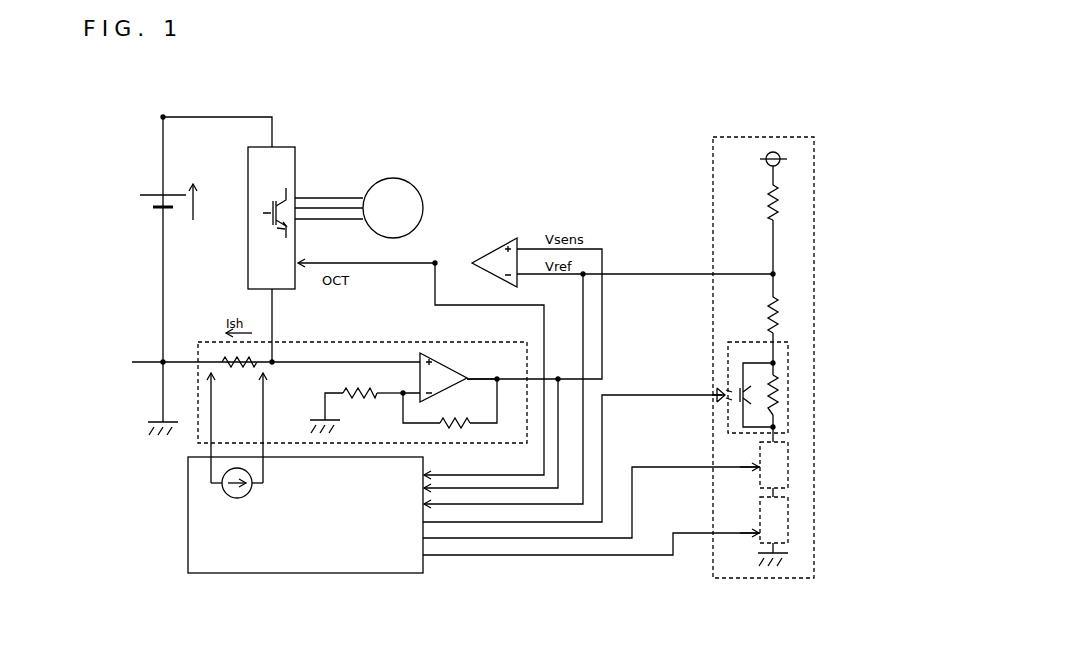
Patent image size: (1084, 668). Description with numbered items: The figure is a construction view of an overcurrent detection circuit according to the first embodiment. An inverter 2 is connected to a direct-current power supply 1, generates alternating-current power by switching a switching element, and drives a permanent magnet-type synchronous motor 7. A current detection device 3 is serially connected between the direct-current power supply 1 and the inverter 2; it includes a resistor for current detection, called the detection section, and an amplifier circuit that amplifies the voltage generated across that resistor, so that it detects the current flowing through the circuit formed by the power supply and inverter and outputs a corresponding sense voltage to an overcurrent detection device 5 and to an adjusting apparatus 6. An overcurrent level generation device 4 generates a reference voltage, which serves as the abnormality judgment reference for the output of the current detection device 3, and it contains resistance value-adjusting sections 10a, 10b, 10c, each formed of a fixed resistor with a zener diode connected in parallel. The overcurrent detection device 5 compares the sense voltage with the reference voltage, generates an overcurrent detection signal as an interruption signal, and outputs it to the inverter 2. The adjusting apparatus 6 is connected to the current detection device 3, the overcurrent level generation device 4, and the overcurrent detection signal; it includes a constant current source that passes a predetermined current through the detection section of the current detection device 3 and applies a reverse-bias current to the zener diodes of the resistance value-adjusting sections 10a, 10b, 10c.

The direct-current power supply 1 is at (149, 198).
The inverter 2 is at (295, 150).
The current detection device 3 is at (200, 354).
The overcurrent level generation device 4 is at (800, 184).
The overcurrent detection device 5 is at (490, 248).
The adjusting apparatus 6 is at (188, 519).
The permanent magnet-type synchronous motor 7 is at (377, 182).
The resistance value-adjusting section 10a is at (788, 365).
The resistance value-adjusting section 10b is at (788, 463).
The resistance value-adjusting section 10c is at (788, 527).